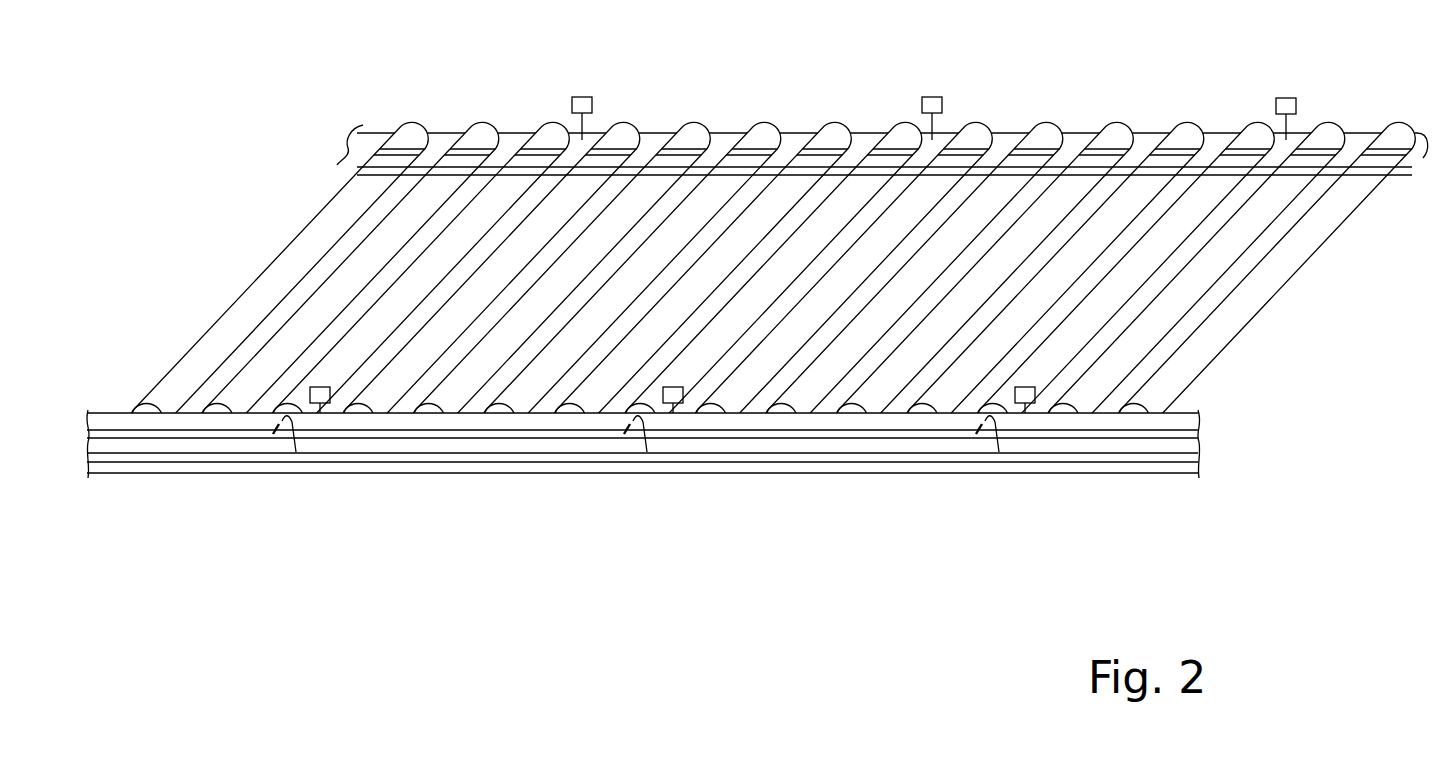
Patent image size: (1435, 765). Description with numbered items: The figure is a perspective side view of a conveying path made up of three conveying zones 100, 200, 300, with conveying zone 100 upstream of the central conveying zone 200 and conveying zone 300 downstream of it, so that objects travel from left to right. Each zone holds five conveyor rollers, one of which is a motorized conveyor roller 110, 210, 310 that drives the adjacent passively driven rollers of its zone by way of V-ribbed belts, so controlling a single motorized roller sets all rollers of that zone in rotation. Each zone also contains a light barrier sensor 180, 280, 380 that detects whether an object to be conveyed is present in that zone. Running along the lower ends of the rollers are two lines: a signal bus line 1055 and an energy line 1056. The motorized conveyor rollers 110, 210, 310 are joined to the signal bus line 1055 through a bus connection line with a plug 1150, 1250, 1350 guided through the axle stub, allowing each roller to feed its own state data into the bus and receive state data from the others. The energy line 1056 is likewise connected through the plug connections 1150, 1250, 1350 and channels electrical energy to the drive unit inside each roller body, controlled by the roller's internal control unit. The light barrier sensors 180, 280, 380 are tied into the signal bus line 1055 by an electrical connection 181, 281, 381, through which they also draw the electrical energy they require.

The conveying zone 100 is at (420, 237).
The central conveying zone 200 is at (773, 297).
The conveying zone 300 is at (1125, 237).
The motorized conveyor roller 110 is at (384, 313).
The motorized conveyor roller 210 is at (753, 365).
The motorized conveyor roller 310 is at (1105, 292).
The light barrier sensor 180 is at (592, 104).
The electrical connection 181 is at (320, 413).
The light barrier sensor 280 is at (942, 104).
The electrical connection 281 is at (673, 413).
The light barrier sensor 380 is at (1296, 104).
The electrical connection 381 is at (1025, 413).
The plug 1150 is at (282, 421).
The plug 1250 is at (633, 421).
The plug 1350 is at (985, 421).
The signal bus line 1055 is at (1140, 432).
The energy line 1056 is at (1132, 455).